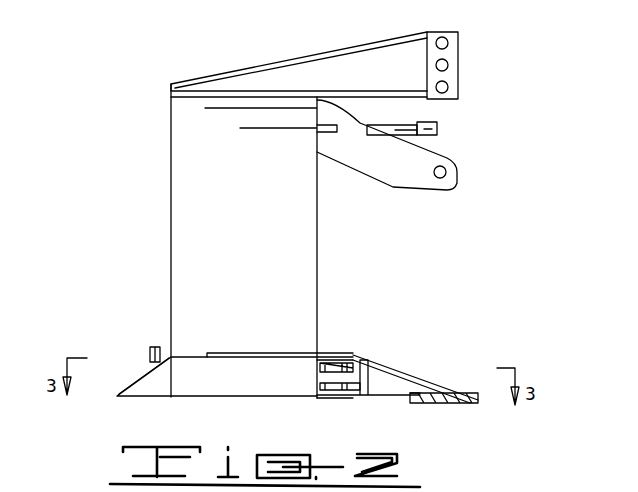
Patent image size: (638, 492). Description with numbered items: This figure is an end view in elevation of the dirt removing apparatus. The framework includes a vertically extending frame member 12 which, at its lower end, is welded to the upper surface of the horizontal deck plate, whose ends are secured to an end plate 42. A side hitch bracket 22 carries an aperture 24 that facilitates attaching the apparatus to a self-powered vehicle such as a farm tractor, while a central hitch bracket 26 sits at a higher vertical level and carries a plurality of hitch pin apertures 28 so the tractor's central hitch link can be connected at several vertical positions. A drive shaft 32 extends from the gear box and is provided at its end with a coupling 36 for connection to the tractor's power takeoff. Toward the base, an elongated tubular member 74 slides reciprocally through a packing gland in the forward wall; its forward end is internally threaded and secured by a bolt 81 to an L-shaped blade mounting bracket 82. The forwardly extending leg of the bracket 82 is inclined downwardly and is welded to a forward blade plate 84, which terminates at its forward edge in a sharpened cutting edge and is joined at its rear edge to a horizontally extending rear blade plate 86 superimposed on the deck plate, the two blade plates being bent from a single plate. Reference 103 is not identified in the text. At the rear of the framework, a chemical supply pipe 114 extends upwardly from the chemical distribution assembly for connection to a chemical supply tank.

The vertically extending frame member 12 is at (253, 214).
The side hitch bracket 22 is at (413, 178).
The aperture 24 is at (443, 170).
The central hitch bracket 26 is at (430, 33).
The hitch pin aperture 28 is at (442, 43).
The drive shaft 32 is at (377, 123).
The coupling 36 is at (437, 123).
The end plate 42 is at (240, 385).
The tubular member 74 is at (332, 393).
The bolt 81 is at (368, 393).
The L-shaped blade mounting bracket 82 is at (417, 398).
The forward blade plate 84 is at (333, 355).
The rear blade plate 86 is at (253, 355).
The base front edge 103 is at (152, 387).
The chemical supply pipe 114 is at (153, 347).